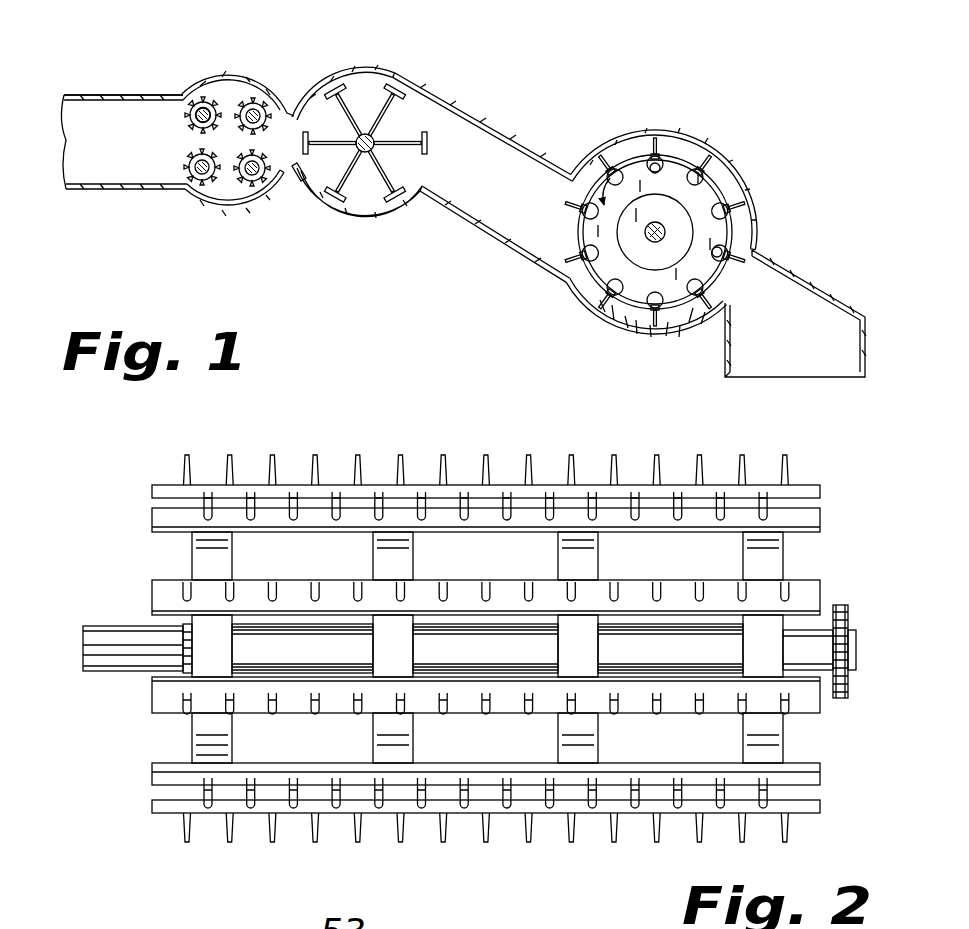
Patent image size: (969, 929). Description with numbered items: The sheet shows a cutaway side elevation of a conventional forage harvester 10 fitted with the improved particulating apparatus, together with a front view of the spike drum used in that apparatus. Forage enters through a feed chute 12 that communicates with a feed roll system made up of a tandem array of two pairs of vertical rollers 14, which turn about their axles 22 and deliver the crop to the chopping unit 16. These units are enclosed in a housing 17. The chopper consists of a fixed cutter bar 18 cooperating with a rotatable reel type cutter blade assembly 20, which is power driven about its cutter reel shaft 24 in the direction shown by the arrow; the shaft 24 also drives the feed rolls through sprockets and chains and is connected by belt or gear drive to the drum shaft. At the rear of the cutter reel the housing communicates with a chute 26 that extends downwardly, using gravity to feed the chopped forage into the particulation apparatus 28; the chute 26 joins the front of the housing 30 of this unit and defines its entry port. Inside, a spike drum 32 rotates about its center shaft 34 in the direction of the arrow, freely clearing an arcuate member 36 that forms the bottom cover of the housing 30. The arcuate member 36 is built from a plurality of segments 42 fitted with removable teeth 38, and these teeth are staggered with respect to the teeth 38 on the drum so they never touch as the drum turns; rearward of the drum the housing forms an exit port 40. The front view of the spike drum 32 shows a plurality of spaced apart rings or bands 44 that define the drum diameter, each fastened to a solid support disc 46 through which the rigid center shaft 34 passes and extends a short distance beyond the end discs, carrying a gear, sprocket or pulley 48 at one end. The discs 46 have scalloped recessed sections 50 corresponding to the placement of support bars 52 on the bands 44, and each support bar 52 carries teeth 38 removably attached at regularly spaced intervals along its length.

In FIG. 1, the forage harvester 10 is at (483, 83).
In FIG. 1, the feed chute 12 is at (80, 104).
In FIG. 1, the vertical rollers 14 is at (206, 104).
In FIG. 1, the chopping unit 16 is at (362, 62).
In FIG. 1, the housing 17 is at (233, 77).
In FIG. 1, the fixed cutter bar 18 is at (296, 178).
In FIG. 1, the reel type cutter blade assembly 20 is at (354, 175).
In FIG. 1, the axle of feed rolls 22 is at (198, 117).
In FIG. 1, the cutter reel shaft 24 is at (393, 112).
In FIG. 1, the chute 26 is at (512, 157).
In FIG. 1, the particulation apparatus 28 is at (706, 125).
In FIG. 1, the housing of particulating apparatus 30 is at (726, 178).
In FIG. 1, the spike drum 32 is at (729, 188).
In FIG. 2, the spike drum 32 is at (178, 457).
In FIG. 1, the center shaft 34 is at (666, 232).
In FIG. 1, the arcuate member 36 is at (678, 332).
In FIG. 1, the teeth 38 is at (652, 140).
In FIG. 2, the teeth 38 is at (788, 473).
In FIG. 1, the exit port 40 is at (815, 350).
In FIG. 1, the segments 42 is at (566, 286).
In FIG. 2, the rings or bands 44 is at (205, 552).
In FIG. 1, the support disc 46 is at (665, 180).
In FIG. 2, the gear, sprocket or pulley 48 is at (840, 683).
In FIG. 1, the scalloped recessed sections 50 is at (723, 253).
In FIG. 2, the support bars 52 is at (152, 522).